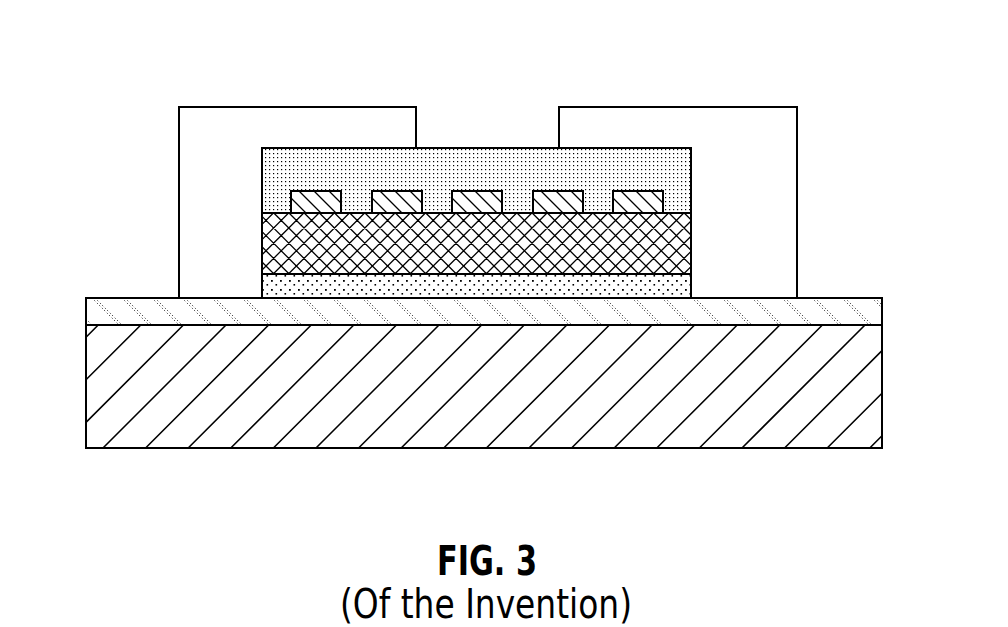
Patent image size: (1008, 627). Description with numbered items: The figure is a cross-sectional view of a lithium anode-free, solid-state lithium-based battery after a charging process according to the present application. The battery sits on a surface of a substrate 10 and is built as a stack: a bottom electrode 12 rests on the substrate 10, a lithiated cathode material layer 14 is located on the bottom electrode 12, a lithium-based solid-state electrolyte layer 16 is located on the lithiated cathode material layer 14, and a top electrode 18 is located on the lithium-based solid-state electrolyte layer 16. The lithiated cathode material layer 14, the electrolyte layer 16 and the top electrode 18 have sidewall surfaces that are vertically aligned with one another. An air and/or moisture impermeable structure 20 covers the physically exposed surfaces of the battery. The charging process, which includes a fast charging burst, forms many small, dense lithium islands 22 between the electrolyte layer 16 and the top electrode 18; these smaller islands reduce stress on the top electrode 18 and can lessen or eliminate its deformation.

The substrate 10 is at (453, 400).
The bottom electrode 12 is at (130, 302).
The lithiated cathode material layer 14 is at (678, 287).
The lithium-based solid-state electrolyte layer 16 is at (453, 257).
The top electrode 18 is at (657, 157).
The air and/or moisture impermeable structure 20 is at (202, 163).
The lithium islands 22 is at (632, 195).